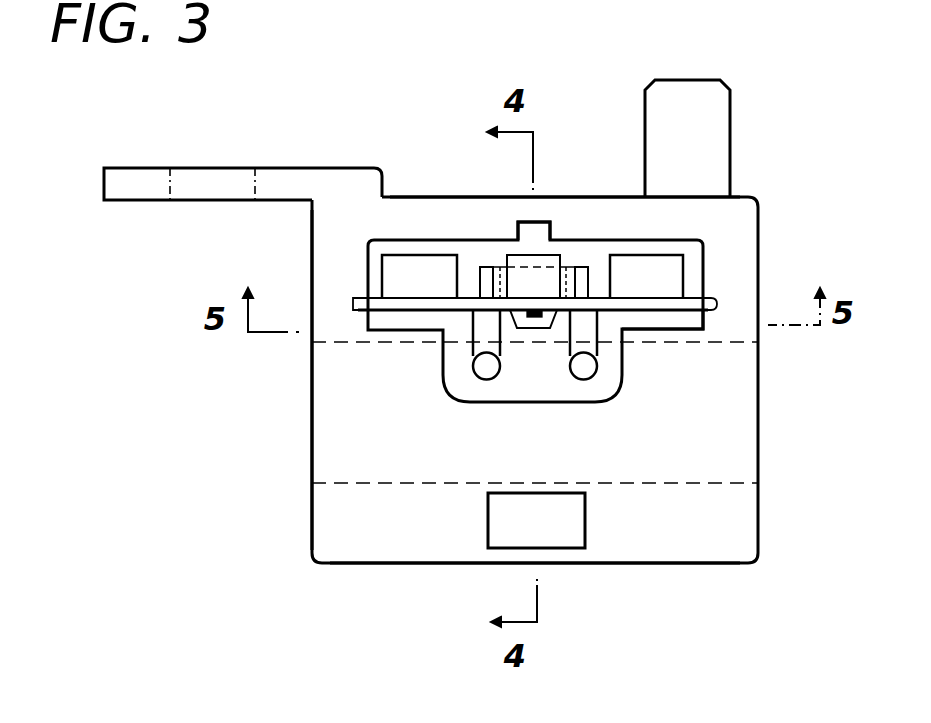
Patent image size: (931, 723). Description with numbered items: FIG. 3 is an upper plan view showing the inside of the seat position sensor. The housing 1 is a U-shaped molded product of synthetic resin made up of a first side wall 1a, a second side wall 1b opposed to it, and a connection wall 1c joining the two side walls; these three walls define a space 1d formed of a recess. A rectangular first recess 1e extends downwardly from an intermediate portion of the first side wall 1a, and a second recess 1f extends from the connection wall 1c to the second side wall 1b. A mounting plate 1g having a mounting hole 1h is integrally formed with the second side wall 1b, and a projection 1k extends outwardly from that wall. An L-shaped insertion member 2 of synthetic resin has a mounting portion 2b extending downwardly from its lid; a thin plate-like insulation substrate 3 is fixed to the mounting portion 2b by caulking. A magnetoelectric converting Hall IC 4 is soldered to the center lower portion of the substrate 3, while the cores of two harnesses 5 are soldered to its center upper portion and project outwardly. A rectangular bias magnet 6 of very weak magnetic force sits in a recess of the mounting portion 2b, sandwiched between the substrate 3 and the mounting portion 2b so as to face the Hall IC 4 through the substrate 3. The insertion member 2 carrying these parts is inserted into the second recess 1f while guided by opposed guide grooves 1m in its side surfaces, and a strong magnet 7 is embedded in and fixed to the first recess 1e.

The housing 1 is at (304, 430).
The first side wall 1a is at (710, 563).
The second side wall 1b is at (583, 196).
The connection wall 1c is at (333, 458).
The space 1d is at (738, 458).
The first recess 1e is at (562, 537).
The second recess 1f is at (687, 278).
The mounting plate 1g is at (139, 168).
The mounting hole 1h is at (205, 185).
The projection 1k is at (728, 128).
The guide grooves 1m is at (717, 303).
The insertion member 2 is at (434, 228).
The mounting portion 2b is at (485, 238).
The substrate 3 is at (666, 310).
The Hall IC 4 is at (547, 300).
The harnesses 5 is at (492, 379).
The bias magnet 6 is at (480, 283).
The magnet 7 is at (523, 518).